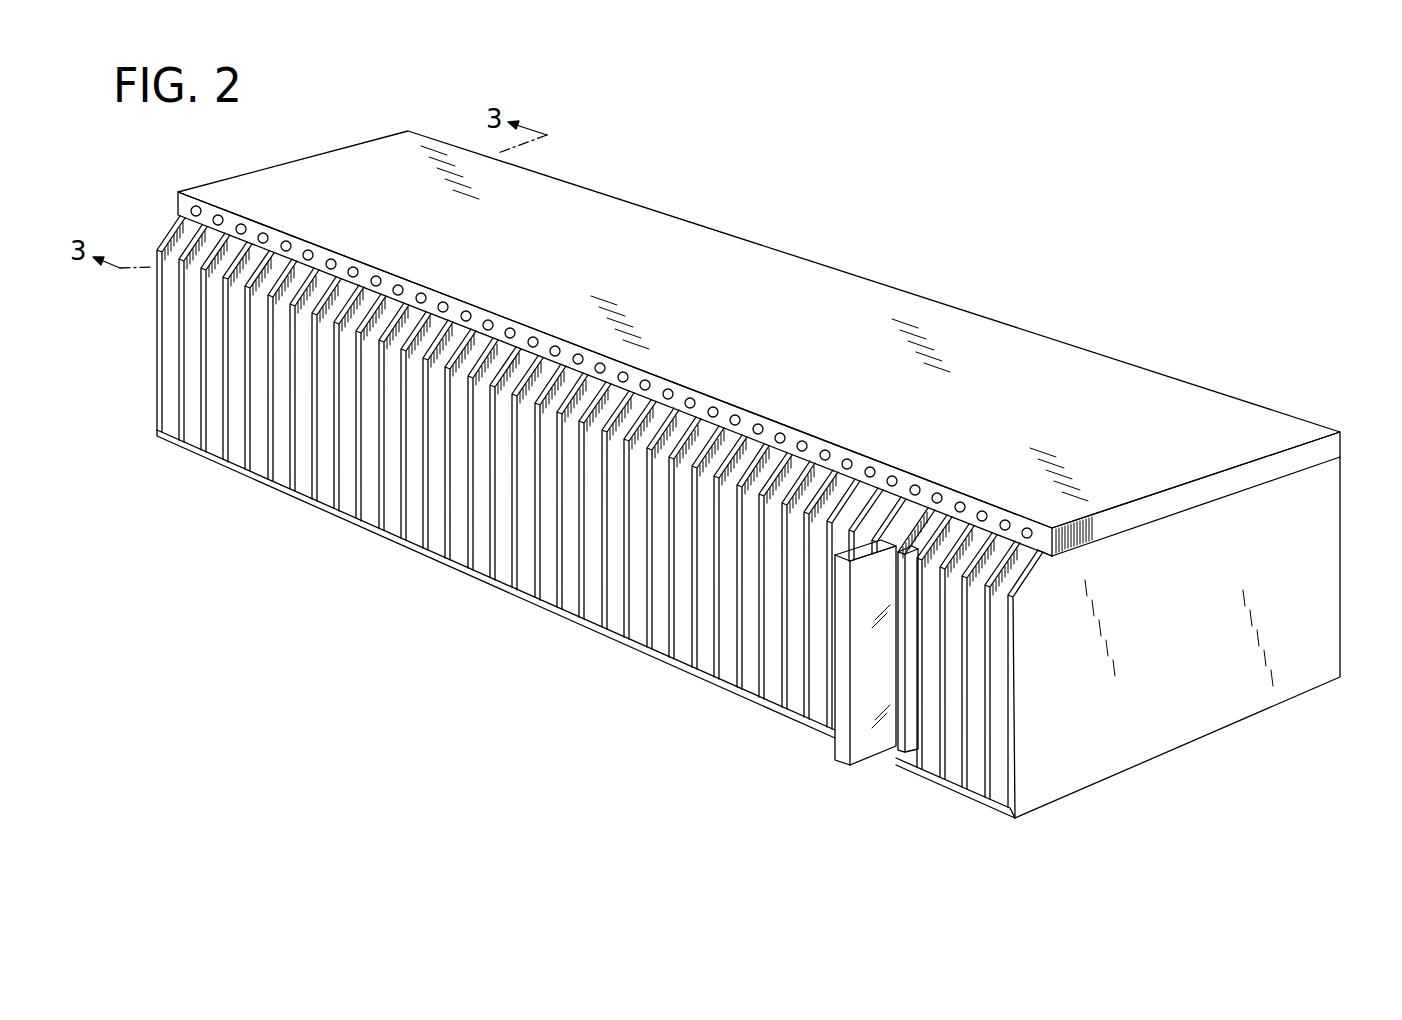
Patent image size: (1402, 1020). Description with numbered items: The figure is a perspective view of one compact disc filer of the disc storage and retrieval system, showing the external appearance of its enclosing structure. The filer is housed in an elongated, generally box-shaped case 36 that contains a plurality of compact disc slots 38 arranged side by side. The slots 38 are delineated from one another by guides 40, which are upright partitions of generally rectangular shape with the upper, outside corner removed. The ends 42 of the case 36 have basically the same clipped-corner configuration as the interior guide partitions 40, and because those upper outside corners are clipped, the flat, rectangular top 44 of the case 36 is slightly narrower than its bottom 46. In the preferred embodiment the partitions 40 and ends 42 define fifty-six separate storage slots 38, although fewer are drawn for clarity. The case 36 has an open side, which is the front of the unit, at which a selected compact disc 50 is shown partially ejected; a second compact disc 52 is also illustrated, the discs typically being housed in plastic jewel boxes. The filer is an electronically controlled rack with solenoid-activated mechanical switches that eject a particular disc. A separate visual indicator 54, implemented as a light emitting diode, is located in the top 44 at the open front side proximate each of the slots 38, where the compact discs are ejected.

The filer case 36 is at (952, 292).
The compact disc slots 38 is at (572, 593).
The guides 40 is at (684, 637).
The ends 42 is at (157, 340).
The top 44 is at (1173, 410).
The bottom 46 is at (450, 558).
The compact disc 50 is at (835, 748).
The compact disc 52 is at (906, 745).
The visual indicator 54 is at (443, 303).